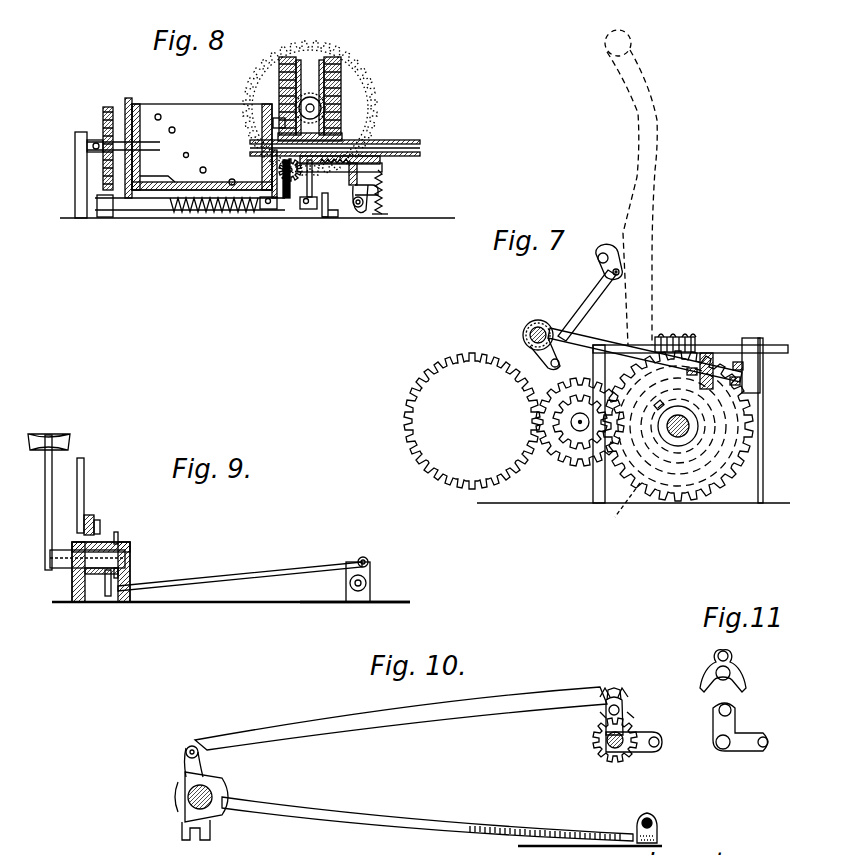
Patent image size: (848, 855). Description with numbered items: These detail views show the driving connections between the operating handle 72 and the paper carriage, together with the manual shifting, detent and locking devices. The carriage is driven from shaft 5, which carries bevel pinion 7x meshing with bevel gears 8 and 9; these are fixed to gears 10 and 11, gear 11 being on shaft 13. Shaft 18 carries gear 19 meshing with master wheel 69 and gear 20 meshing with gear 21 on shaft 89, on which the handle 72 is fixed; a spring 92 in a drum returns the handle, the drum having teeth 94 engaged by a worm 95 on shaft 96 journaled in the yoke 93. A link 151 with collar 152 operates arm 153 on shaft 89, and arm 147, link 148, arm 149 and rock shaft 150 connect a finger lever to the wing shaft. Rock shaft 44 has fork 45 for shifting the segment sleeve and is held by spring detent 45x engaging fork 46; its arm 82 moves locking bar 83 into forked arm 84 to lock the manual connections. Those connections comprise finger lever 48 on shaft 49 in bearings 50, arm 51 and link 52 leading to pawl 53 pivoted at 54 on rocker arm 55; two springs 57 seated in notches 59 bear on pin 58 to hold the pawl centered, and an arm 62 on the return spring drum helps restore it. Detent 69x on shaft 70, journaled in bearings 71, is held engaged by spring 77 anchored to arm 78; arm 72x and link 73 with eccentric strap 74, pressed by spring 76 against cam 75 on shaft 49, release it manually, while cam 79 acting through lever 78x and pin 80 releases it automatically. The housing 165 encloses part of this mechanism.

In FIG. 8, the shaft 5 is at (320, 108).
In FIG. 8, the bevel pinion 7x is at (340, 78).
In FIG. 8, the bevel gear 8 is at (322, 64).
In FIG. 8, the bevel gear 9 is at (302, 70).
In FIG. 8, the gear 10 is at (338, 56).
In FIG. 8, the gear 11 is at (285, 54).
In FIG. 10, the shaft 13 is at (607, 752).
In FIG. 7, the shaft 18 is at (571, 419).
In FIG. 7, the gear 19 is at (556, 446).
In FIG. 7, the gear 20 is at (558, 462).
In FIG. 7, the gear 21 is at (617, 512).
In FIG. 8, the rock shaft 44 is at (361, 216).
In FIG. 9, the rock shaft 44 is at (350, 600).
In FIG. 8, the fork 45 is at (358, 173).
In FIG. 8, the spring detent 45x is at (380, 188).
In FIG. 8, the fork 46 is at (381, 200).
In FIG. 9, the finger lever 48 is at (70, 440).
In FIG. 9, the shaft 49 is at (72, 562).
In FIG. 9, the bearings 50 is at (80, 604).
In FIG. 9, the arm 51 is at (96, 537).
In FIG. 9, the link 52 is at (85, 500).
In FIG. 10, the pawl 53 is at (597, 718).
In FIG. 10, the pivot 54 is at (622, 712).
In FIG. 11, the pivot 54 is at (731, 707).
In FIG. 10, the pawl carrier or rocker arm 55 is at (644, 748).
In FIG. 11, the pawl carrier or rocker arm 55 is at (737, 727).
In FIG. 10, the springs 57 is at (609, 690).
In FIG. 10, the pin 58 is at (615, 693).
In FIG. 11, the notches 59 is at (715, 733).
In FIG. 7, the arm 62 is at (612, 248).
In FIG. 7, the master wheel 69 is at (455, 356).
In FIG. 8, the detent 69x is at (312, 214).
In FIG. 8, the shaft 70 is at (263, 214).
In FIG. 10, the shaft 70 is at (652, 822).
In FIG. 8, the bearings 71 is at (168, 215).
In FIG. 7, the operating handle 72 is at (657, 125).
In FIG. 8, the arm 72x is at (106, 215).
In FIG. 10, the arm 72x is at (656, 829).
In FIG. 8, the link 73 is at (115, 212).
In FIG. 10, the link 73 is at (447, 822).
In FIG. 9, the eccentric strap 74 is at (122, 540).
In FIG. 10, the eccentric strap 74 is at (224, 788).
In FIG. 9, the cam 75 is at (131, 548).
In FIG. 10, the cam 75 is at (213, 812).
In FIG. 10, the spring 76 is at (527, 827).
In FIG. 8, the spring 77 is at (232, 212).
In FIG. 8, the arm 78 is at (272, 212).
In FIG. 8, the lever 78x is at (263, 127).
In FIG. 8, the cam 79 is at (269, 147).
In FIG. 8, the pin 80 is at (272, 173).
In FIG. 9, the arm 82 is at (372, 570).
In FIG. 9, the locking bar 83 is at (298, 568).
In FIG. 9, the forked arm 84 is at (108, 600).
In FIG. 7, the shaft 89 is at (684, 434).
In FIG. 7, the spring 92 is at (763, 446).
In FIG. 7, the yoke or frame 93 is at (755, 398).
In FIG. 7, the teeth 94 is at (705, 486).
In FIG. 7, the worm 95 is at (678, 336).
In FIG. 7, the shaft 96 is at (732, 348).
In FIG. 7, the arm 147 is at (620, 263).
In FIG. 7, the link 148 is at (592, 303).
In FIG. 7, the arm 149 is at (540, 356).
In FIG. 7, the rock shaft 150 is at (528, 329).
In FIG. 7, the link 151 is at (618, 345).
In FIG. 7, the collar 152 is at (745, 360).
In FIG. 7, the arm 153 is at (752, 408).
In FIG. 8, the housing 165 is at (202, 110).